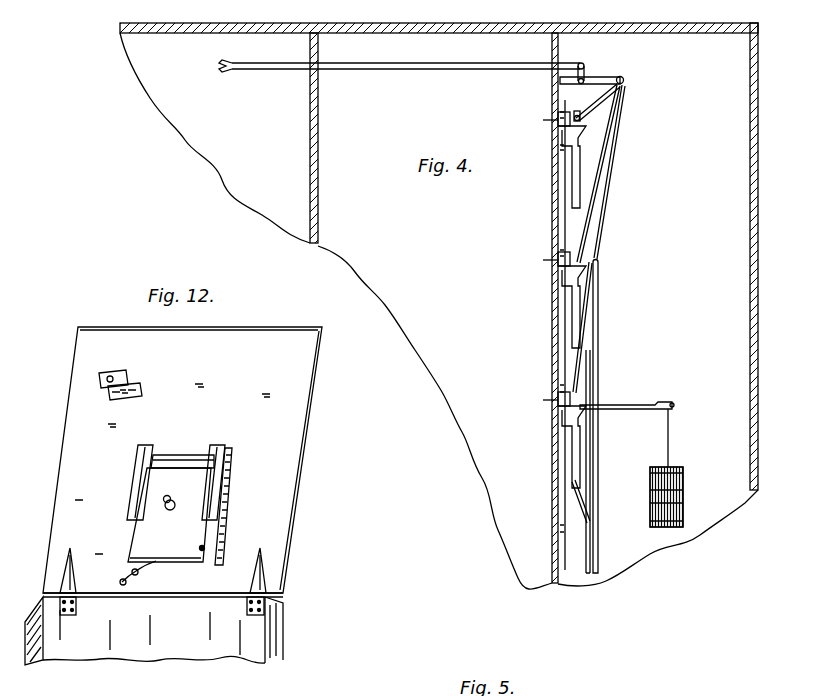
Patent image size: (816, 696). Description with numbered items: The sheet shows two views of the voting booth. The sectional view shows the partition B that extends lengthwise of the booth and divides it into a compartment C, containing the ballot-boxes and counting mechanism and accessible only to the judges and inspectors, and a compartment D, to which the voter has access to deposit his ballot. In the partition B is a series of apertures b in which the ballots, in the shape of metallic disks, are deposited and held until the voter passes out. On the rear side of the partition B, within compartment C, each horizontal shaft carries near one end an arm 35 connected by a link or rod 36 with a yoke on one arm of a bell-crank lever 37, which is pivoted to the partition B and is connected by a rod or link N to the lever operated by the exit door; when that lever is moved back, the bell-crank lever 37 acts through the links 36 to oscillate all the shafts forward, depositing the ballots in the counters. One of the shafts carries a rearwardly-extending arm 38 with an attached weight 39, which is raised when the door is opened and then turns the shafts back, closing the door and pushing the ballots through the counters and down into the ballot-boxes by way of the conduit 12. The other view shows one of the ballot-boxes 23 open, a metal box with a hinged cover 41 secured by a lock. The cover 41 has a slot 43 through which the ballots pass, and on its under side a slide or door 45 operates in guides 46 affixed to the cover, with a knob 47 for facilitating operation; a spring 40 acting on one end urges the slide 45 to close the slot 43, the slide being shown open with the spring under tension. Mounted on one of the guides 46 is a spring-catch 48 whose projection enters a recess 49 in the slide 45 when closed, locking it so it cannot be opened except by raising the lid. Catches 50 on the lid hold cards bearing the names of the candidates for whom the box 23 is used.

In FIG. 4, the partition B is at (552, 172).
In FIG. 4, the compartment C is at (717, 256).
In FIG. 4, the compartment D is at (370, 138).
In FIG. 4, the rod or link N is at (273, 71).
In FIG. 4, the apertures b is at (548, 124).
In FIG. 4, the conduit 12 is at (599, 363).
In FIG. 4, the arm 35 is at (581, 124).
In FIG. 4, the link or rod 36 is at (598, 108).
In FIG. 4, the bell-crank lever 37 is at (606, 80).
In FIG. 4, the rearwardly-extending arm 38 is at (636, 403).
In FIG. 4, the weight 39 is at (650, 491).
In FIG. 12, the ballot-box 23 is at (154, 606).
In FIG. 12, the spring 40 is at (150, 564).
In FIG. 12, the hinged cover 41 is at (182, 460).
In FIG. 12, the slot 43 is at (183, 463).
In FIG. 12, the slide or door 45 is at (169, 515).
In FIG. 12, the guides 46 is at (134, 498).
In FIG. 12, the knob 47 is at (178, 501).
In FIG. 12, the spring-catch 48 is at (226, 500).
In FIG. 12, the recess 49 is at (210, 549).
In FIG. 12, the catches 50 is at (122, 378).